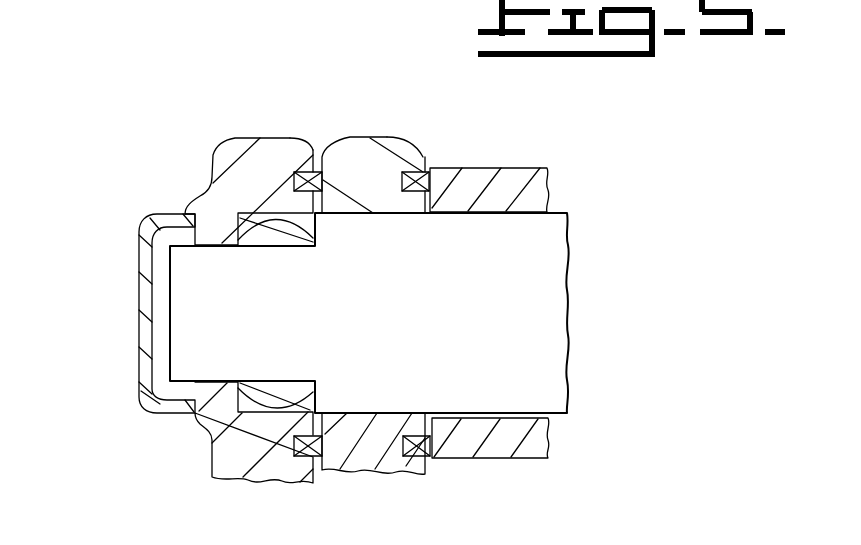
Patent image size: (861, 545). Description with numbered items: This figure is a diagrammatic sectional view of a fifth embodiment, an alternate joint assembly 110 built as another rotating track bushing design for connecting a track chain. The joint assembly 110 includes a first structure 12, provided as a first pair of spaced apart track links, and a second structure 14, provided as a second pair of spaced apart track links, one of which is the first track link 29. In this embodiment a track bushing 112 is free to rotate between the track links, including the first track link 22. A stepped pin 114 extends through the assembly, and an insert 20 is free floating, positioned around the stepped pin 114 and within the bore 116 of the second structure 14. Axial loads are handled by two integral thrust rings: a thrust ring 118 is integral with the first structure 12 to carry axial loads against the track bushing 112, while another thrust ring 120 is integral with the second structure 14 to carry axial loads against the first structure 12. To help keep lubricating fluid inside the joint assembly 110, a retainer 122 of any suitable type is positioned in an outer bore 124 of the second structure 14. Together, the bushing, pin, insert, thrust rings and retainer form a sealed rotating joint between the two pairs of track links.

The first structure 12 is at (386, 126).
The second structure 14 is at (196, 126).
The insert 20 is at (275, 228).
The first track link 22 is at (415, 156).
The first track link 29 is at (260, 138).
The joint assembly 110 is at (582, 156).
The track bushing 112 is at (516, 188).
The stepped pin 114 is at (431, 316).
The bore 116 is at (252, 210).
The thrust ring 118 is at (430, 182).
The thrust ring 120 is at (322, 180).
The retainer 122 is at (101, 365).
The outer bore 124 is at (187, 414).